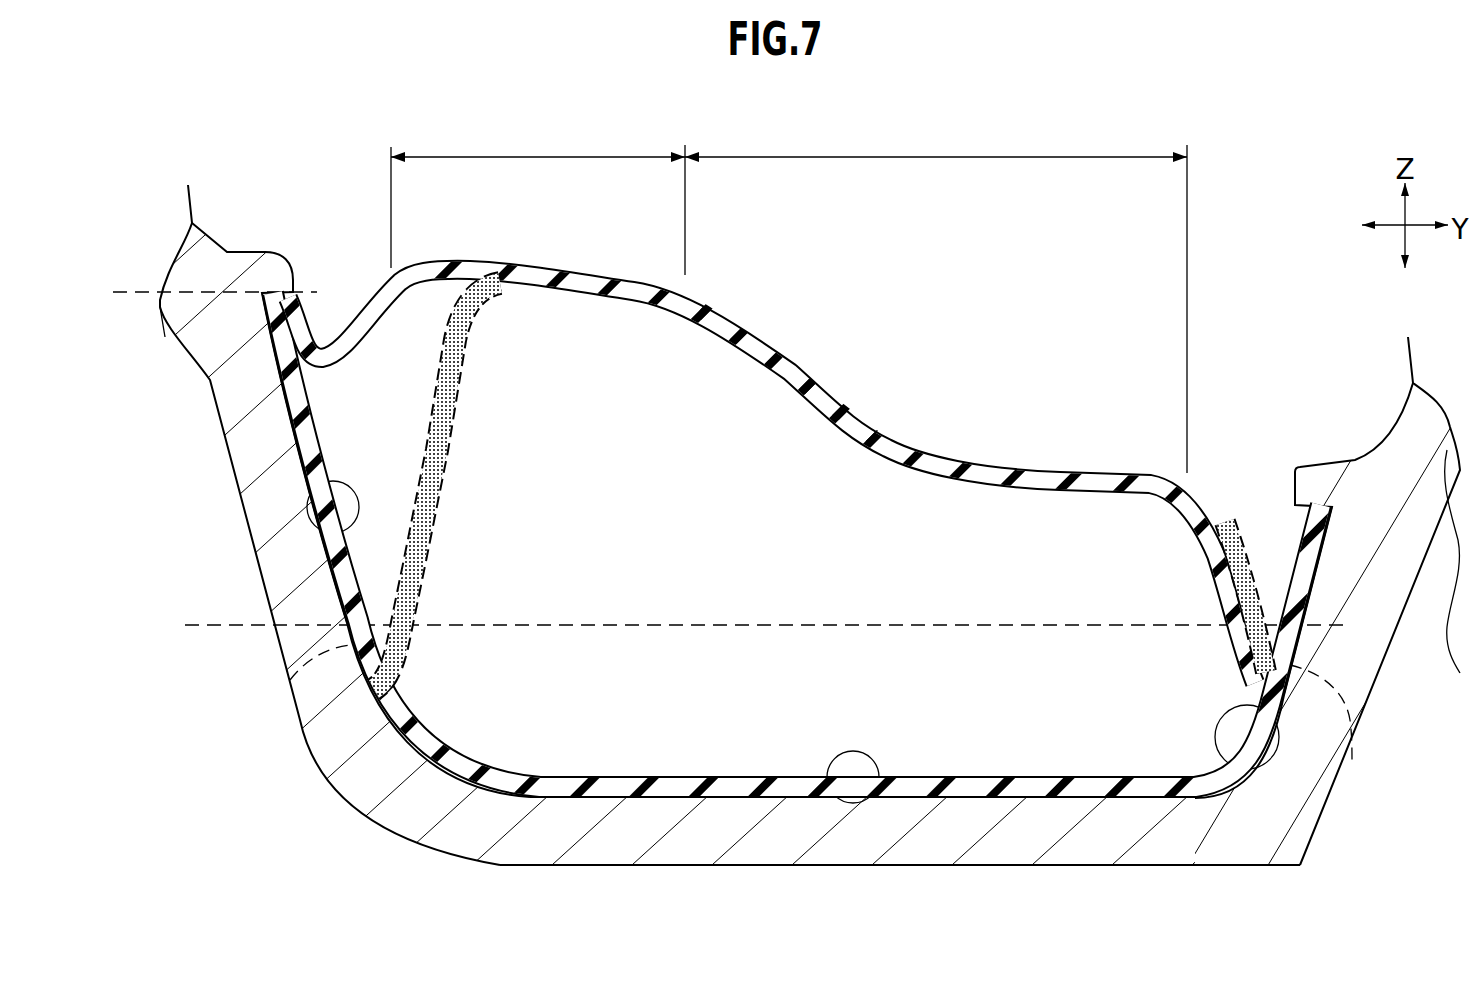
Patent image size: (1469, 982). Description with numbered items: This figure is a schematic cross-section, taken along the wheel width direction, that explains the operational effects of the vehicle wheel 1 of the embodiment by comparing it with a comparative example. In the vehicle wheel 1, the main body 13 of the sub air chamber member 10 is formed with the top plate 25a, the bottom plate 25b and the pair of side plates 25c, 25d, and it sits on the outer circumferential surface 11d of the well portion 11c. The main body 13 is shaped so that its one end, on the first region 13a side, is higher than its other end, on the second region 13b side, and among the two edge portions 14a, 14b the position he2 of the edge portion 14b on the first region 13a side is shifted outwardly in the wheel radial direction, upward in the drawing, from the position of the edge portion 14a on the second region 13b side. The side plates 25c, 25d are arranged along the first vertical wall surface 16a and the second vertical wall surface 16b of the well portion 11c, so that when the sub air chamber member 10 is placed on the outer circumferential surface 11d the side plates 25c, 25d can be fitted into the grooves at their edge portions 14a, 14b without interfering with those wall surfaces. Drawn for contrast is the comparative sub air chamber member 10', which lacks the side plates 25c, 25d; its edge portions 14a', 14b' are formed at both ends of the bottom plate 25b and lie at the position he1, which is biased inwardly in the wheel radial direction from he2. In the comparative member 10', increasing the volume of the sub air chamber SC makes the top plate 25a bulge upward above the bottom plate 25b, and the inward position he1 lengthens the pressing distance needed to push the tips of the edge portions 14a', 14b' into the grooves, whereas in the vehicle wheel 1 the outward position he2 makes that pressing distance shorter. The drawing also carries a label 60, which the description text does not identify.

The vehicle wheel 1 is at (1257, 338).
The sub air chamber member 10 is at (797, 478).
The sub air chamber member of the comparative example 10' is at (820, 486).
The well portion 11c is at (759, 248).
The outer circumferential surface 11d is at (876, 768).
The main body 13 is at (600, 277).
The first region 13a is at (538, 157).
The second region 13b is at (935, 157).
The edge portion 14a is at (1331, 601).
The edge portion of the comparative example 14a' is at (1364, 736).
The edge portion 14b is at (329, 525).
The edge portion of the comparative example 14b' is at (276, 676).
The first vertical wall surface 16a is at (1262, 778).
The second vertical wall surface 16b is at (337, 530).
The top plate 25a is at (800, 373).
The bottom plate 25b is at (727, 798).
The side plate 25c is at (1293, 610).
The side plate 25d is at (305, 445).
The cover member 60 is at (1018, 431).
The sub air chamber SC is at (830, 604).
The position of the edge portions of the comparative example he1 is at (213, 623).
The position of the edge portion he2 is at (139, 290).